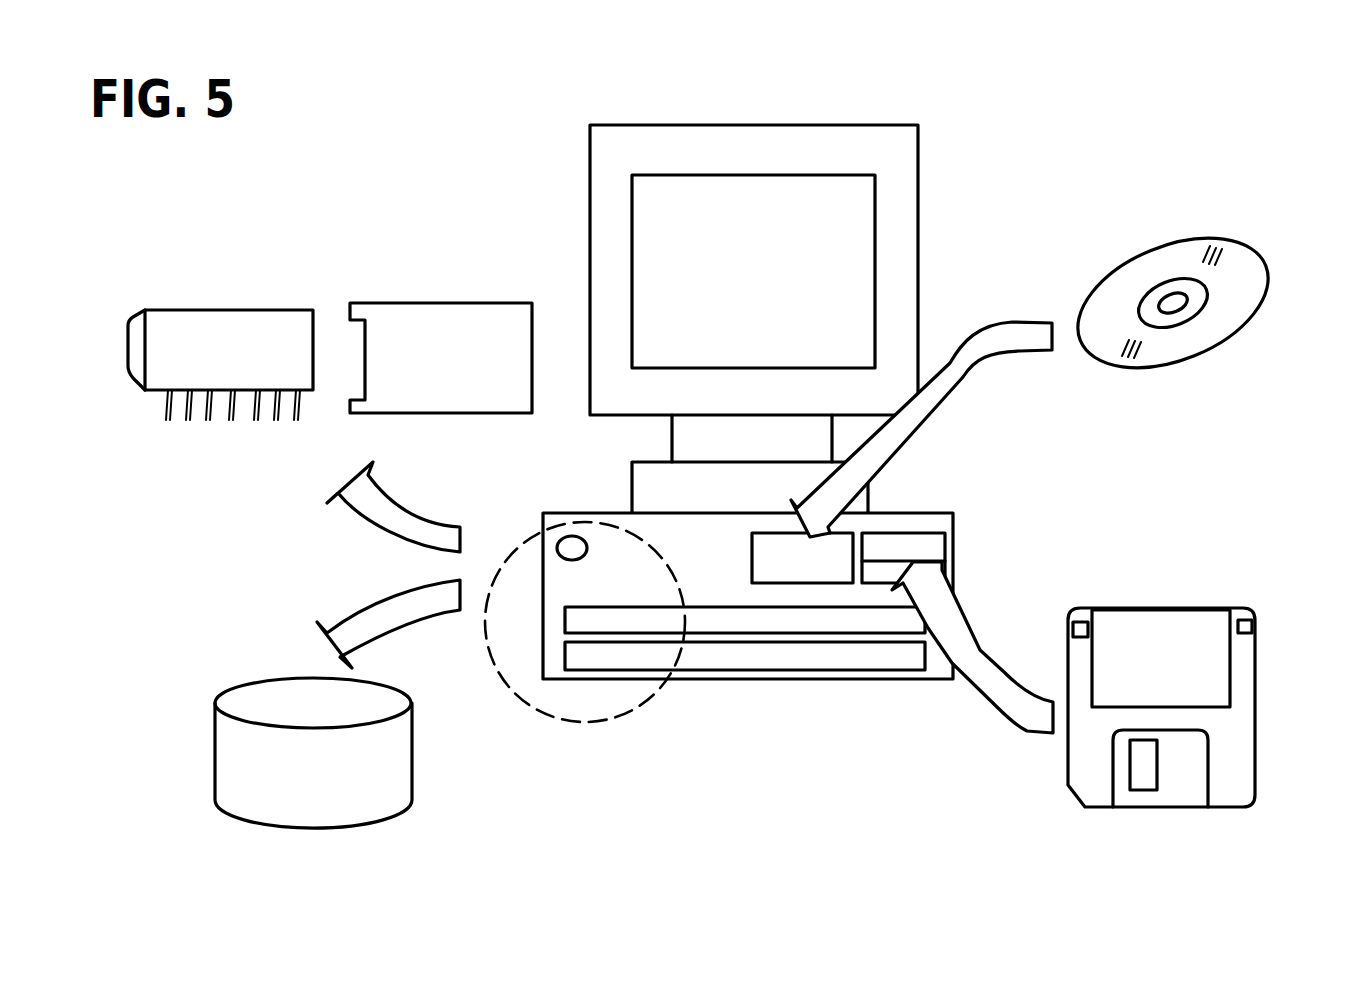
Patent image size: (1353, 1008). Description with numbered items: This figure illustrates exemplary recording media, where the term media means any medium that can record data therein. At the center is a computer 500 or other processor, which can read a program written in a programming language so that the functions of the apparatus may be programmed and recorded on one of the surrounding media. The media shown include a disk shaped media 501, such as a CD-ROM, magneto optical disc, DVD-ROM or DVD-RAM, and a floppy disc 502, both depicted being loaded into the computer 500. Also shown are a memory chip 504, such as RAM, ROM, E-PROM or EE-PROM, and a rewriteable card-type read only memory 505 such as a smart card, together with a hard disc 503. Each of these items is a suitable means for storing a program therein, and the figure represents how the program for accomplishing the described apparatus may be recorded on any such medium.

The computer 500 is at (918, 163).
The disk shaped media 501 is at (1258, 252).
The floppy disc 502 is at (1257, 630).
The hard disc 503 is at (213, 773).
The memory chip 504 is at (180, 308).
The rewriteable card-type read only memory 505 is at (397, 305).